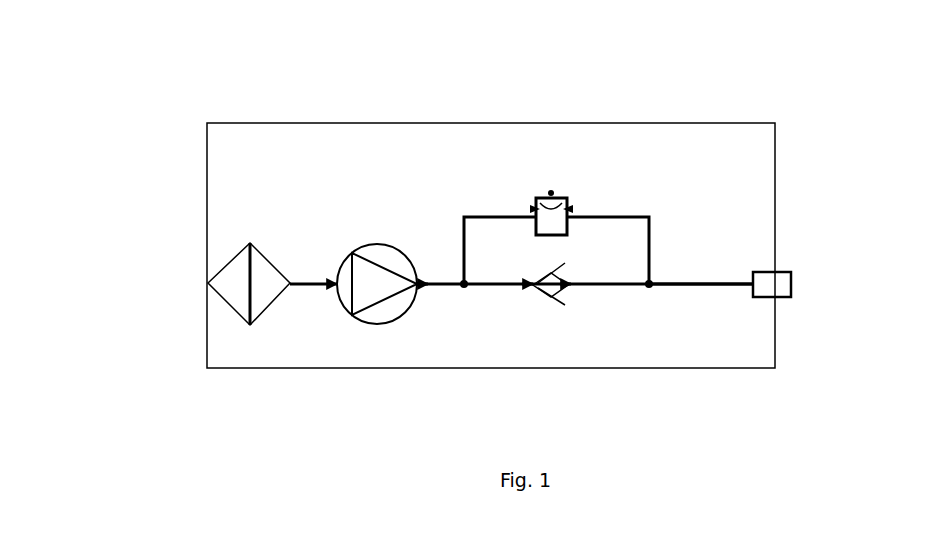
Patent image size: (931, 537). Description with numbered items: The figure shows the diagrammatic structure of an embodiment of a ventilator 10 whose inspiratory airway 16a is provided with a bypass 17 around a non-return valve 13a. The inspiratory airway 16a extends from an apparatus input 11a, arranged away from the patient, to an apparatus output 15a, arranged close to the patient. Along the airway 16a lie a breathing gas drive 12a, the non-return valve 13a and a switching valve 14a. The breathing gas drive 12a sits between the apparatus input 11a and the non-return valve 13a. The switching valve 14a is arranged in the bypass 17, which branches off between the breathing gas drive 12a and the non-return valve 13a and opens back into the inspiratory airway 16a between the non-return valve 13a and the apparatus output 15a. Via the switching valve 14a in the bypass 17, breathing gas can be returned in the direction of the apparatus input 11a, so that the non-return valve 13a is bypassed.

The ventilator 10 is at (170, 198).
The apparatus input 11a is at (225, 287).
The breathing gas drive 12a is at (360, 245).
The non-return valve 13a is at (540, 275).
The switching valve 14a is at (561, 201).
The apparatus output 15a is at (778, 270).
The inspiratory airway 16a is at (682, 284).
The bypass 17 is at (490, 215).